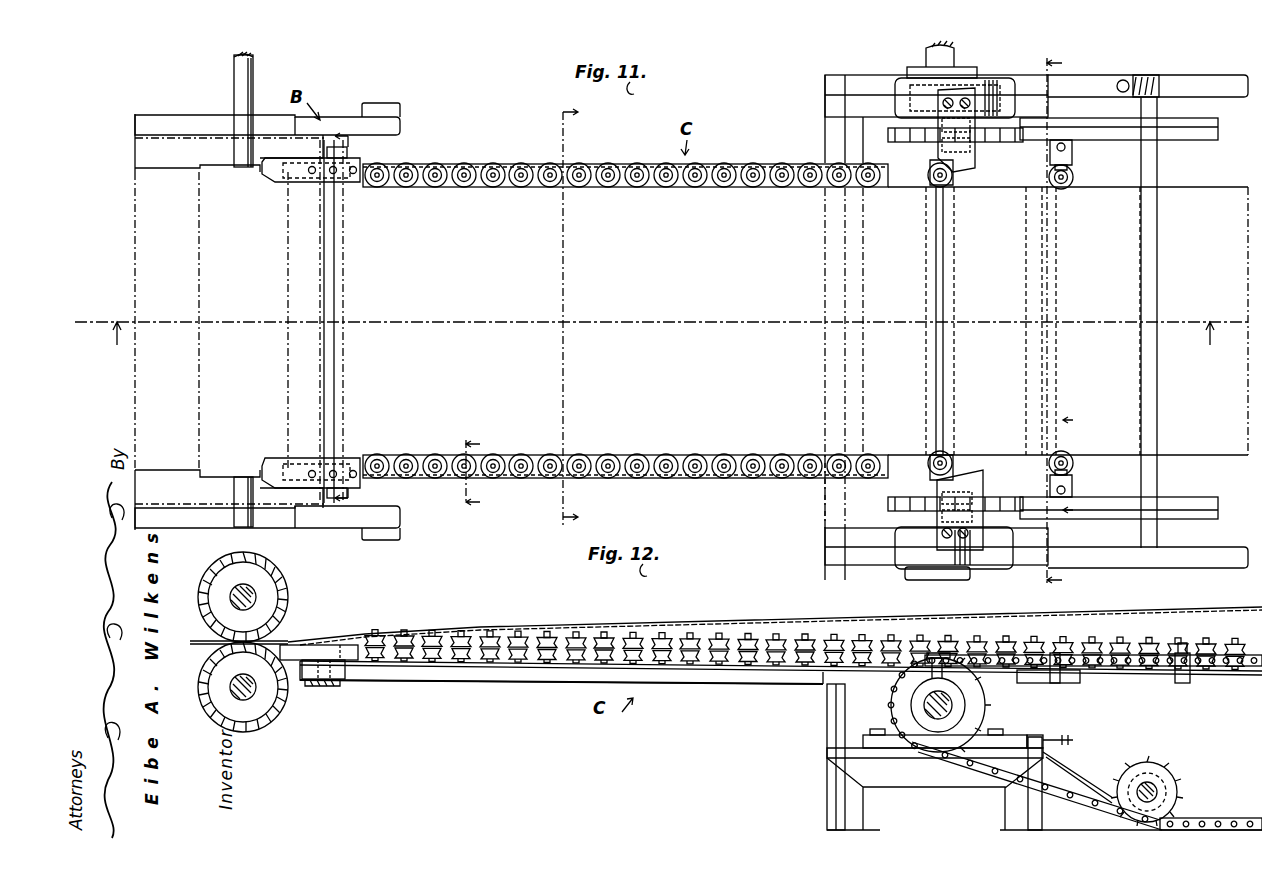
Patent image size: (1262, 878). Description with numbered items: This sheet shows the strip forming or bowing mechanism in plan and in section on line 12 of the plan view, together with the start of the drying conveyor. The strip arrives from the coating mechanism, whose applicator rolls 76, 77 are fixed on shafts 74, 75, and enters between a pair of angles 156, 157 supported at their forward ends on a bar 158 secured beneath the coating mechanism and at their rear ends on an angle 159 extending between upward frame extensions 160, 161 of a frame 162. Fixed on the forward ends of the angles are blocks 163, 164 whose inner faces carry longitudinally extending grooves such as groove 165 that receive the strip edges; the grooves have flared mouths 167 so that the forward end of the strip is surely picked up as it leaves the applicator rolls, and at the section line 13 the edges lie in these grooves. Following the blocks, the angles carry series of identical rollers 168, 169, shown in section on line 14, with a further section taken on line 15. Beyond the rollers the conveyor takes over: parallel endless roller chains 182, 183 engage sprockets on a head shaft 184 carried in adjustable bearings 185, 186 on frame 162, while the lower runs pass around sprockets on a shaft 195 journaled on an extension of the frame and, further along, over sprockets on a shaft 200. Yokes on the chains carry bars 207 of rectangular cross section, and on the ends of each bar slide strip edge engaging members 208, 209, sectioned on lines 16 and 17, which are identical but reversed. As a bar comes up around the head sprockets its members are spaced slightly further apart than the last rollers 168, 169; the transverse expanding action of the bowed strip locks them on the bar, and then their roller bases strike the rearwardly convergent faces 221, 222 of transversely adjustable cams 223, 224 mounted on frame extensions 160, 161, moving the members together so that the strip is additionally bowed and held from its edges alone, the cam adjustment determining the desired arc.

In FIG. 11, the section line 12— 12 is at (662, 332).
In FIG. 11, the section line 13— 13 is at (354, 321).
In FIG. 11, the section line 14— 14 is at (485, 473).
In FIG. 11, the section line 15— 15 is at (583, 320).
In FIG. 11, the section line 16— 16 is at (1067, 321).
In FIG. 11, the section line 17— 17 is at (1080, 468).
In FIG. 12, the shaft 74 is at (254, 591).
In FIG. 12, the shaft 75 is at (256, 690).
In FIG. 11, the applicator roll 76 is at (199, 396).
In FIG. 12, the applicator roll 76 is at (272, 568).
In FIG. 12, the applicator roll 77 is at (278, 708).
In FIG. 11, the angle 156 is at (583, 166).
In FIG. 11, the angle 157 is at (606, 478).
In FIG. 11, the bar 158 is at (340, 400).
In FIG. 12, the bar 158 is at (325, 690).
In FIG. 11, the angle 159 is at (825, 512).
In FIG. 12, the angle 159 is at (827, 694).
In FIG. 11, the upward frame extension 160 is at (850, 95).
In FIG. 11, the upward frame extension 161 is at (880, 556).
In FIG. 12, the frame 162 is at (1128, 658).
In FIG. 11, the block 163 is at (345, 183).
In FIG. 12, the block 163 is at (340, 645).
In FIG. 11, the block 164 is at (350, 458).
In FIG. 12, the groove 165 is at (350, 682).
In FIG. 12, the flared mouth 167 is at (305, 640).
In FIG. 11, the rollers 168 is at (521, 187).
In FIG. 11, the rollers 169 is at (635, 455).
In FIG. 11, the endless roller chain 182 is at (1100, 140).
In FIG. 11, the endless roller chain 183 is at (1092, 490).
In FIG. 12, the head shaft 184 is at (952, 708).
In FIG. 11, the adjustable bearing 185 is at (978, 78).
In FIG. 11, the adjustable bearing 186 is at (980, 568).
In FIG. 12, the shaft 195 is at (1160, 785).
In FIG. 12, the shaft 200 is at (1185, 683).
In FIG. 11, the bar 207 is at (938, 268).
In FIG. 11, the strip edge engaging member 208 is at (928, 182).
In FIG. 11, the strip edge engaging member 209 is at (925, 435).
In FIG. 11, the rearwardly convergent face 221 is at (958, 180).
In FIG. 11, the rearwardly convergent face 222 is at (972, 472).
In FIG. 11, the transversely adjustable cam 223 is at (970, 150).
In FIG. 11, the transversely adjustable cam 224 is at (968, 475).